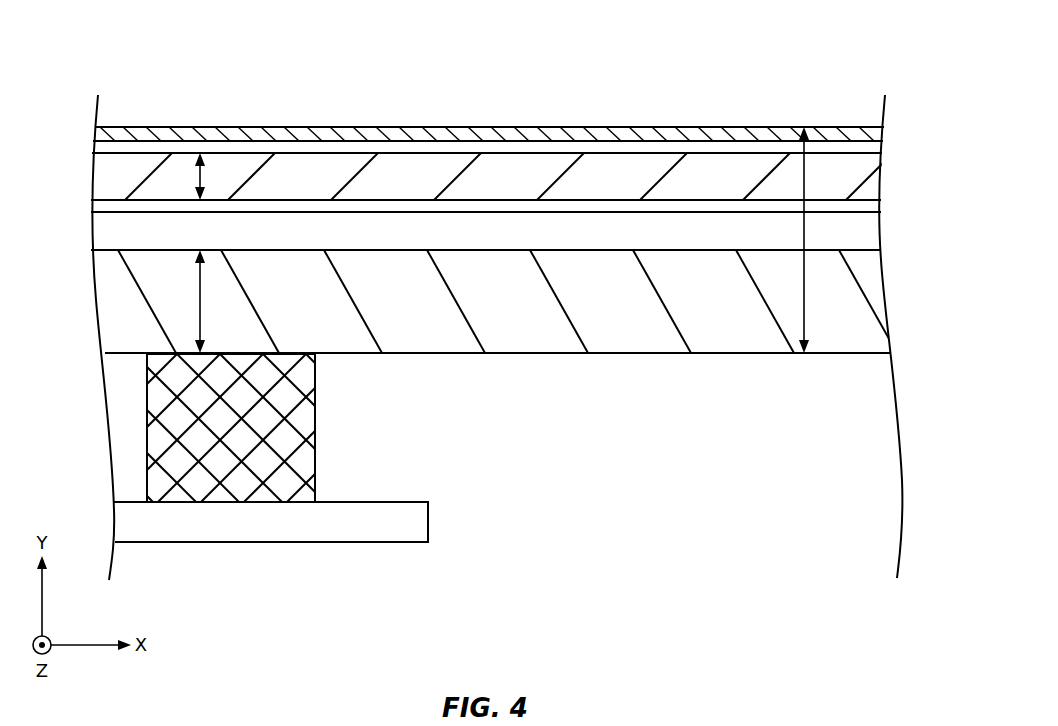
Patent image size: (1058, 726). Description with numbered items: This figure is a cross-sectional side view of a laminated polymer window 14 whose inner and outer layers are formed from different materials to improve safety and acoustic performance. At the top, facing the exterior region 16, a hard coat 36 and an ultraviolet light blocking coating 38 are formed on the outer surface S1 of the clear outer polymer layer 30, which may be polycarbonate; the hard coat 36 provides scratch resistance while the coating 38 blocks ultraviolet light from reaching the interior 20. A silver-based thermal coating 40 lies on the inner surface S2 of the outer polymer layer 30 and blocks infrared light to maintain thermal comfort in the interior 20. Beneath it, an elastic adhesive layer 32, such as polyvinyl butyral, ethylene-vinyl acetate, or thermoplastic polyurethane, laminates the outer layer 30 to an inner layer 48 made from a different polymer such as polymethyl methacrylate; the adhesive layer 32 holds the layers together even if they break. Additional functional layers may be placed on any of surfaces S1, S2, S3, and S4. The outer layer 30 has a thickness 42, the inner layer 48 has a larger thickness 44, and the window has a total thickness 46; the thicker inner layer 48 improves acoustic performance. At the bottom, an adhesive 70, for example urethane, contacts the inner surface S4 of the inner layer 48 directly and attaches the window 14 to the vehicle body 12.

The window 14 is at (176, 55).
The display cover layer region 16 is at (762, 101).
The interior 20 is at (828, 439).
The body 12 is at (250, 530).
The adhesive 70 is at (316, 433).
The hard coat 36 is at (876, 132).
The ultraviolet light blocking coating 38 is at (876, 150).
The outer polymer layer 30 is at (876, 188).
The thermal coating 40 is at (876, 206).
The adhesive layer 32 is at (876, 233).
The inner layer 48 is at (877, 283).
The thickness 42 is at (196, 175).
The thickness 44 is at (196, 296).
The total thickness 46 is at (800, 232).
The outer surface S1 is at (336, 141).
The inner surface S2 is at (503, 200).
The surface S3 is at (411, 250).
The inner surface S4 is at (551, 353).